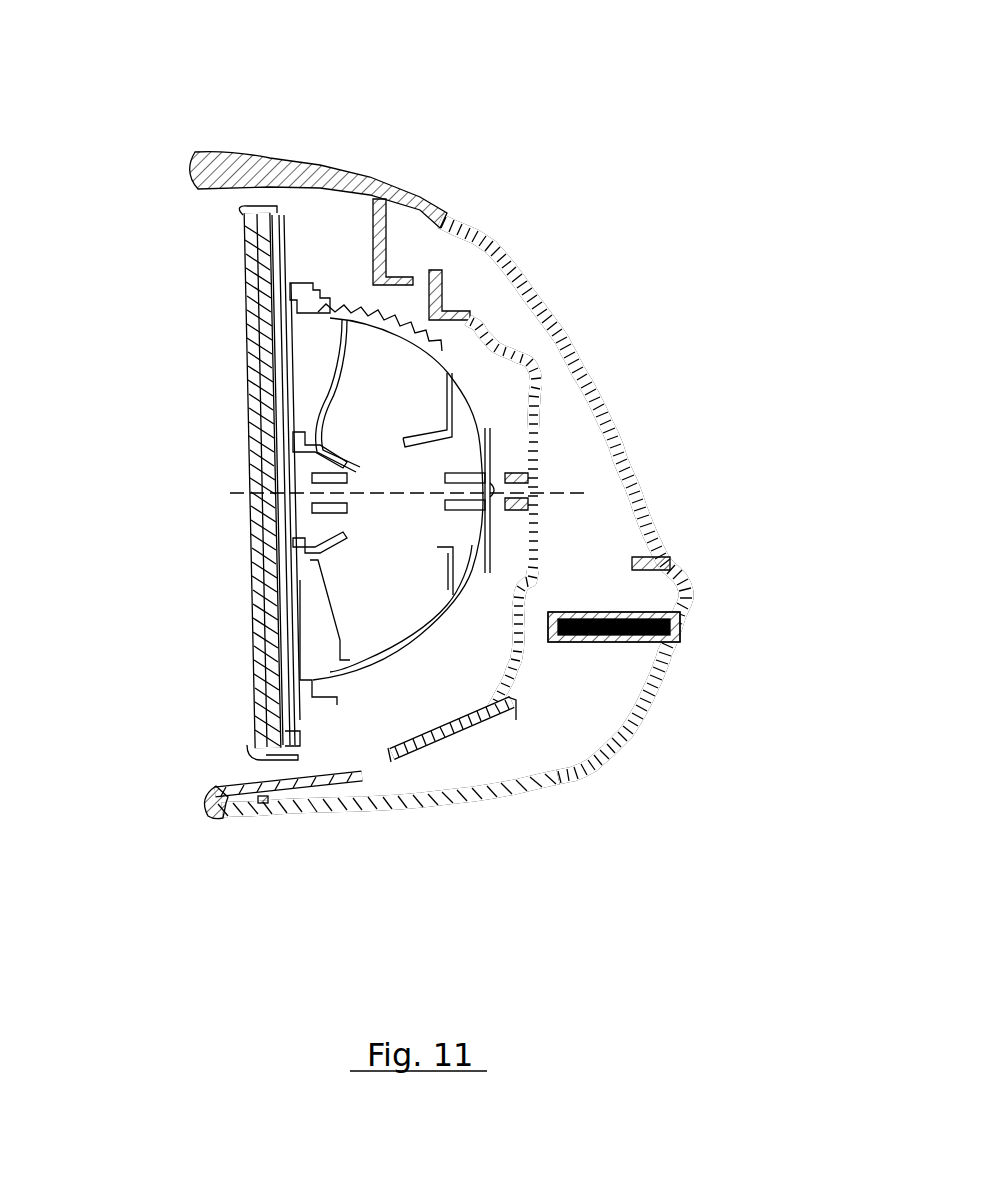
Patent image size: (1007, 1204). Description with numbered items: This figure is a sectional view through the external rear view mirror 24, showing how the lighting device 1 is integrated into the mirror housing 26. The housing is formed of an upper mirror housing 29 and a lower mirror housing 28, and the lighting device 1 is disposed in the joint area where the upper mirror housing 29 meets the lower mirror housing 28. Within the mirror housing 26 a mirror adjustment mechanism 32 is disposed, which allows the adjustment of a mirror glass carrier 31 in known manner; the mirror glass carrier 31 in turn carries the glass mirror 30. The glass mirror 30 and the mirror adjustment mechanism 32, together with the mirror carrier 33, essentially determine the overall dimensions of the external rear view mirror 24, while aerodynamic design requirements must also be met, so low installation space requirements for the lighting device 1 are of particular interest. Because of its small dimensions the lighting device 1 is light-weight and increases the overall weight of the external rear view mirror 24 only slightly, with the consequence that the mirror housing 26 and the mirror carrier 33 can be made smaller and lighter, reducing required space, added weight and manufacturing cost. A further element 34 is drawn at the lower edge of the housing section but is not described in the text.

The lighting device 1 is at (707, 627).
The external rear view mirror 24 is at (483, 200).
The mirror housing 26 is at (639, 411).
The lower mirror housing 28 is at (555, 777).
The upper mirror housing 29 is at (545, 316).
The glass mirror 30 is at (255, 352).
The mirror glass carrier 31 is at (251, 742).
The mirror adjustment mechanism 32 is at (336, 272).
The mirror carrier 33 is at (468, 321).
The bottom edge piece 34 is at (212, 805).